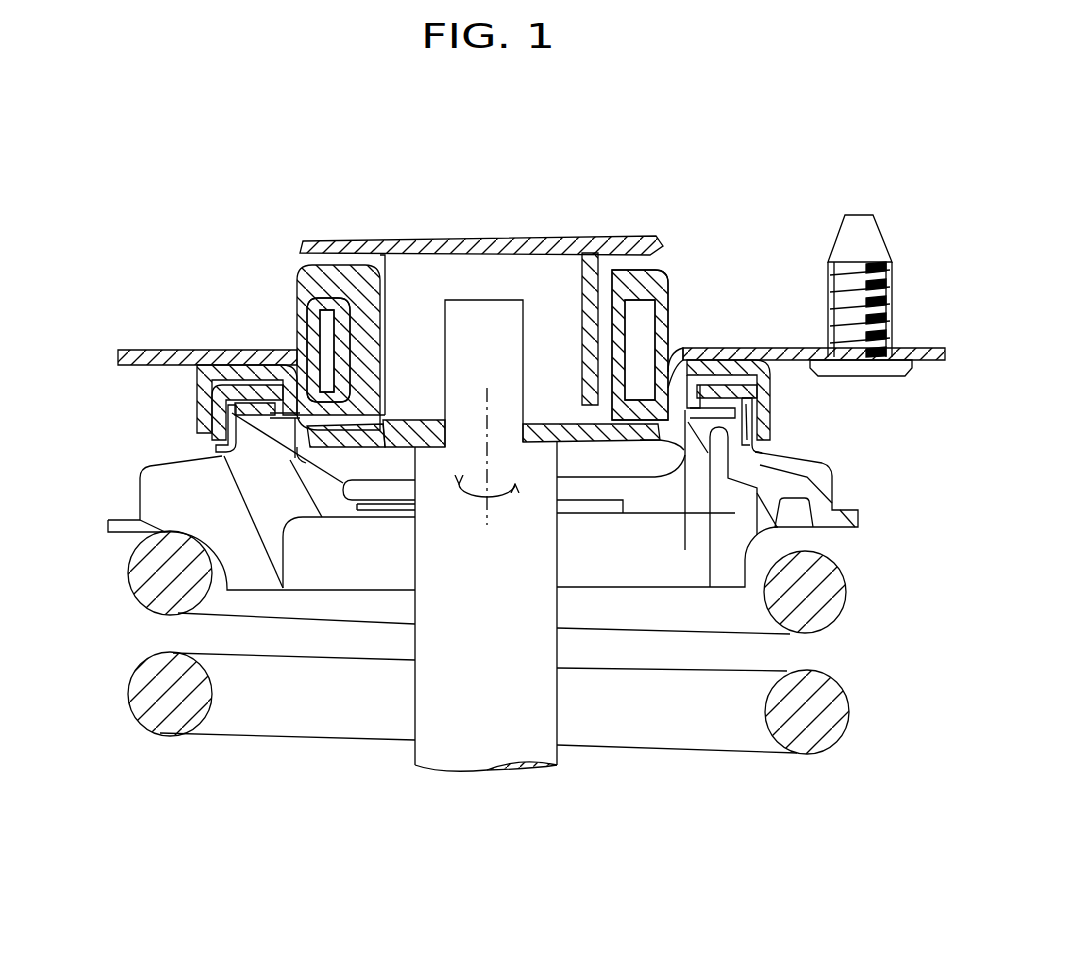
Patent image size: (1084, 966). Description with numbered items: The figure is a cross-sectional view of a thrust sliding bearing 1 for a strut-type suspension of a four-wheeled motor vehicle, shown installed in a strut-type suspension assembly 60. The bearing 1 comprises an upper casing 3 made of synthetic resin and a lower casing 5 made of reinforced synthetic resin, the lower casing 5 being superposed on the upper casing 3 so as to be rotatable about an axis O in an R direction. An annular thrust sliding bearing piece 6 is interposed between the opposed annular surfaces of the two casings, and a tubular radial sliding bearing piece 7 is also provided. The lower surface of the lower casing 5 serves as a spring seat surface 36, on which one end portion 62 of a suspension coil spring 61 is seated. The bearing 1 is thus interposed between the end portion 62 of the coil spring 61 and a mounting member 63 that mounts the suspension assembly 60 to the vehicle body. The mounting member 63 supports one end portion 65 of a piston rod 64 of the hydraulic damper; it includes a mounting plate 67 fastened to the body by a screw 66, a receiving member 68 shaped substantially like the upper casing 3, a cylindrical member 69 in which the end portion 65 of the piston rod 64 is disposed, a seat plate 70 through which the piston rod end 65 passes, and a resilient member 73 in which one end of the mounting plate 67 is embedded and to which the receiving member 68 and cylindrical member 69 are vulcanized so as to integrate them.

The thrust sliding bearing 1 is at (425, 500).
The upper casing 3 is at (814, 378).
The lower casing 5 is at (823, 486).
The annular thrust sliding bearing piece 6 is at (248, 385).
The tubular radial sliding bearing piece 7 is at (770, 411).
The spring seat surface 36 is at (140, 552).
The strut-type suspension assembly 60 is at (449, 665).
The suspension coil spring 61 is at (678, 725).
The one end portion of the suspension coil spring 62 is at (142, 577).
The mounting member 63 is at (462, 306).
The piston rod 64 is at (437, 764).
The one end portion of the piston rod 65 is at (470, 363).
The screw 66 is at (893, 298).
The mounting plate 67 is at (157, 357).
The receiving member 68 is at (257, 383).
The cylindrical member 69 is at (577, 283).
The seat plate 70 is at (405, 443).
The resilient member 73 is at (307, 317).
The axis O is at (488, 395).
The R direction R is at (507, 492).